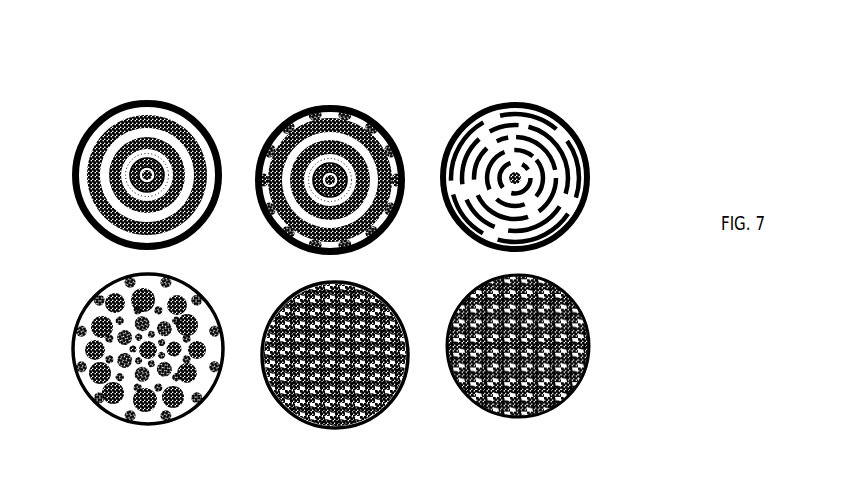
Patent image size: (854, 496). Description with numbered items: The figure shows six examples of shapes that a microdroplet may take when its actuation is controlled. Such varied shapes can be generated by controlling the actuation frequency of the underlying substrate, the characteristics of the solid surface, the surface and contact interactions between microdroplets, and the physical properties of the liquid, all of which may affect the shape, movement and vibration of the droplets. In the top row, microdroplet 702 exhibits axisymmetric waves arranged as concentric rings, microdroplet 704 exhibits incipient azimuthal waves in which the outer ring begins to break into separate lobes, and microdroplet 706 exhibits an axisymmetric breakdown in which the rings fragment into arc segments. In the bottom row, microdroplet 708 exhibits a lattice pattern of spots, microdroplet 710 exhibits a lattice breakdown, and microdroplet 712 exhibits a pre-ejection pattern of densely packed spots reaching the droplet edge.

The microdroplet 702 is at (160, 93).
The microdroplet 704 is at (312, 100).
The microdroplet 706 is at (542, 97).
The microdroplet 708 is at (72, 320).
The microdroplet 710 is at (275, 305).
The microdroplet 712 is at (580, 388).